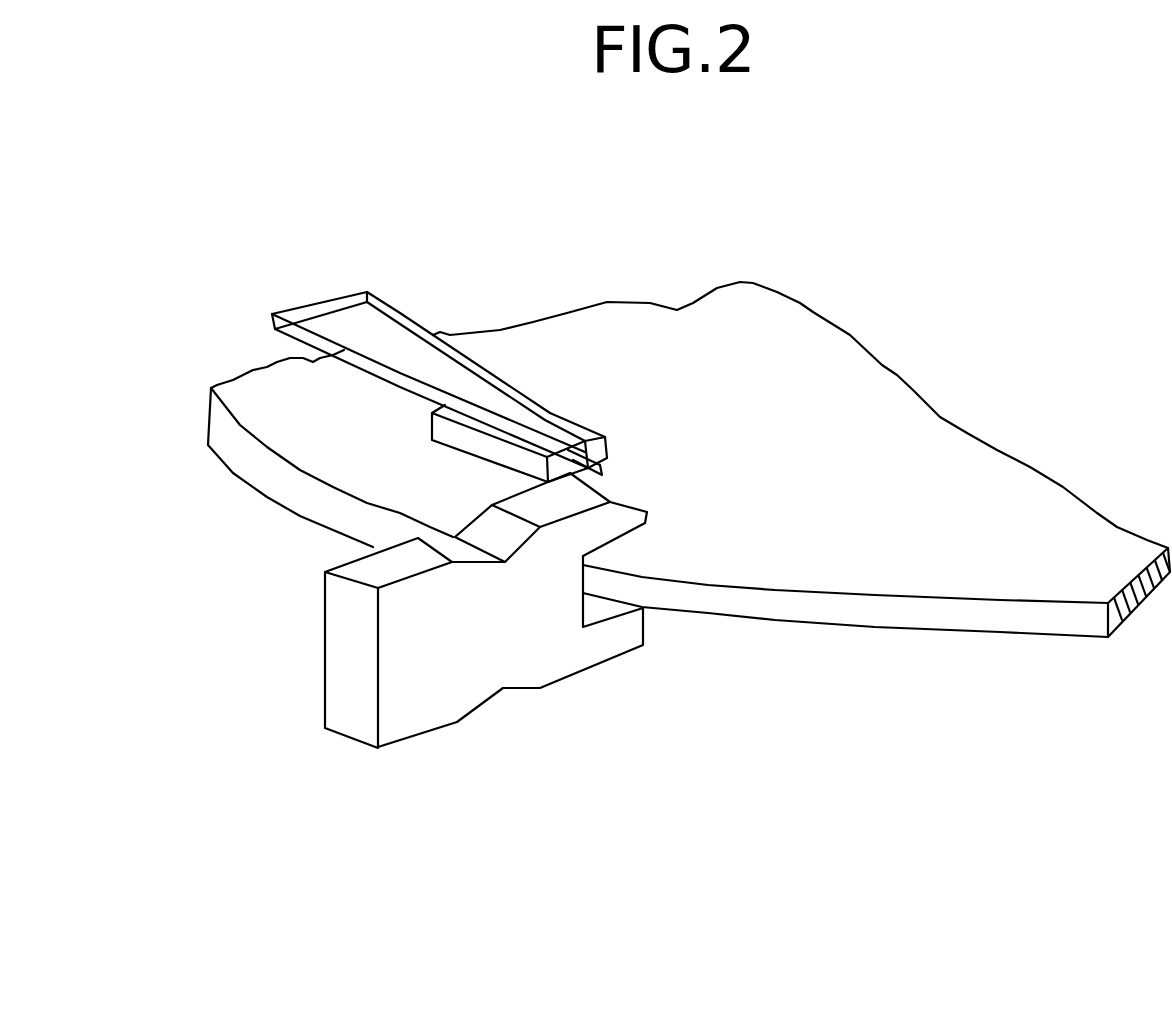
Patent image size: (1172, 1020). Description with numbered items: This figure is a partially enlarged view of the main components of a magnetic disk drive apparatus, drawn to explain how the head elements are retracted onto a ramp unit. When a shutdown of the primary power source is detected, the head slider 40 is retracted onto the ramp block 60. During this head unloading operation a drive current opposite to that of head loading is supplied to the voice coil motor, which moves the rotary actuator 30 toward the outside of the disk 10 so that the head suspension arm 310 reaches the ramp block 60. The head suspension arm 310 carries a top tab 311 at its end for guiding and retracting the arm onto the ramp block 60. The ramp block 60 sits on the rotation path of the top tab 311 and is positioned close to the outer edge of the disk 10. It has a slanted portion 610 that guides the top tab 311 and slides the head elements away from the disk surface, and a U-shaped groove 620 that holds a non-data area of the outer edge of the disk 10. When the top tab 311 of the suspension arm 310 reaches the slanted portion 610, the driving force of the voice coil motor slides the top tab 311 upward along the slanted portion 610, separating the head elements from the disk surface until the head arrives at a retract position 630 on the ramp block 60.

The disk 10 is at (842, 612).
The rotary actuator 30 is at (465, 349).
The head suspension arm 310 is at (385, 333).
The top tab 311 is at (604, 472).
The head slider 40 is at (434, 431).
The ramp block 60 is at (505, 657).
The slanted portion 610 is at (640, 505).
The U-shaped groove 620 is at (600, 560).
The retract position 630 is at (503, 550).